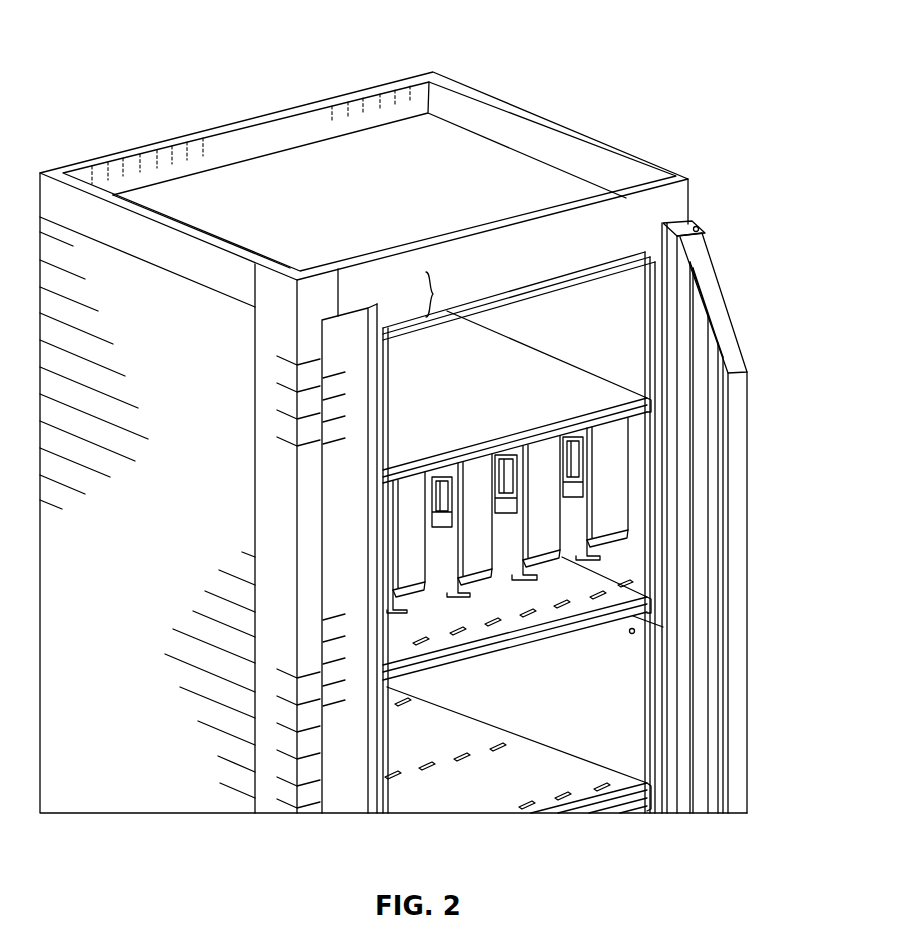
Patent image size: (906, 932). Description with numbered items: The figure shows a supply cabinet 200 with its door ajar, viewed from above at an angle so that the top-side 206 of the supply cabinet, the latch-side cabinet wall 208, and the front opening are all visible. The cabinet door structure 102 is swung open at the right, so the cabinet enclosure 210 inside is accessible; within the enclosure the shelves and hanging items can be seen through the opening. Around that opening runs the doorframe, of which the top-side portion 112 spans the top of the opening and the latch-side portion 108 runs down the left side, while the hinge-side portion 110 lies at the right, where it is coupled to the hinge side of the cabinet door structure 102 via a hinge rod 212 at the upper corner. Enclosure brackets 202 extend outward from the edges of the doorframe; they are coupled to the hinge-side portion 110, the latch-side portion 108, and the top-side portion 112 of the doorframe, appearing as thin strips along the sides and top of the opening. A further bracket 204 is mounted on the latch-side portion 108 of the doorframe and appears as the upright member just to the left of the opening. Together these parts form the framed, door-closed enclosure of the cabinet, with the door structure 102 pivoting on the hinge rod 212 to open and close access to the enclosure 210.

The supply cabinet 200 is at (111, 43).
The cabinet door structure 102 is at (737, 304).
The latch-side portion of doorframe 108 is at (318, 405).
The hinge-side portion of doorframe 110 is at (678, 212).
The top-side portion of doorframe 112 is at (408, 292).
The enclosure brackets 202 is at (597, 268).
The bracket 204 is at (338, 447).
The top-side of supply cabinet 206 is at (357, 215).
The latch-side cabinet wall 208 is at (126, 802).
The cabinet enclosure 210 is at (558, 387).
The hinge rod 212 is at (705, 228).